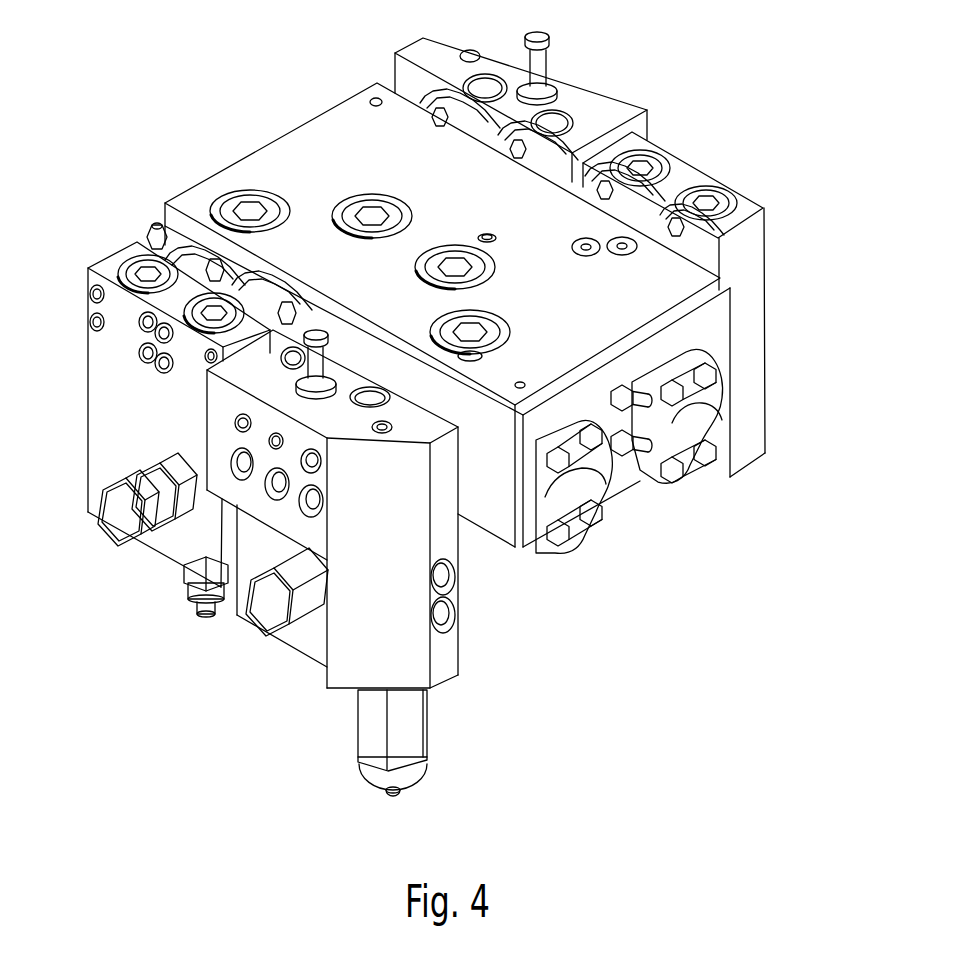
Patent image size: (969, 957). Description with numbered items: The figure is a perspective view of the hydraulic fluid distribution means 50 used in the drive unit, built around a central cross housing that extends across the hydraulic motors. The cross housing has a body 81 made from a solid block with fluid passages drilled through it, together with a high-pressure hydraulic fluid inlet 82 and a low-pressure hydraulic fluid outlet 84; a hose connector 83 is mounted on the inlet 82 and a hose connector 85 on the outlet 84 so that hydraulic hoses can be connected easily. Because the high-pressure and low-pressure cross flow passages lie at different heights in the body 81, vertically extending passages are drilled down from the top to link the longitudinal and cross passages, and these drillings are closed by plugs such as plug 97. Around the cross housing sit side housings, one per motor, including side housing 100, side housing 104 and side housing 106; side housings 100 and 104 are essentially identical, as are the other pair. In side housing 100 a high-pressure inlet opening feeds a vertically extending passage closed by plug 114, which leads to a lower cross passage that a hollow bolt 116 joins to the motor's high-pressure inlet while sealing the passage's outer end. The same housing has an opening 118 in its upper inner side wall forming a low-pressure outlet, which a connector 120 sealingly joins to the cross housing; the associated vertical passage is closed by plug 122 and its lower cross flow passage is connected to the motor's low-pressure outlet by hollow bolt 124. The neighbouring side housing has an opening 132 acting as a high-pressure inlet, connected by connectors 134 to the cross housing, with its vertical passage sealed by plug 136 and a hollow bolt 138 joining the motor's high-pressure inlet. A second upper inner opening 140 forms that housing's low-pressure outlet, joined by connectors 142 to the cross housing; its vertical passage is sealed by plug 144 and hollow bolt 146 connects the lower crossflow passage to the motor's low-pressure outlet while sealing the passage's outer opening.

The hydraulic fluid distribution means 50 is at (780, 311).
The body 81 is at (320, 133).
The high-pressure hydraulic fluid inlet 82 is at (720, 437).
The hose connector 83 is at (700, 417).
The low-pressure hydraulic fluid outlet 84 is at (573, 493).
The hose connector 85 is at (536, 538).
The plug 97 is at (272, 205).
The side housing 100 is at (318, 697).
The side housing 104 is at (571, 64).
The side housing 106 is at (766, 222).
The plug 114 is at (206, 412).
The hollow bolt 116 is at (262, 612).
The opening 118 is at (436, 418).
The connector 120 is at (480, 370).
The plug 122 is at (354, 403).
The hollow bolt 124 is at (300, 615).
The opening 132 is at (234, 287).
The connectors 134 is at (262, 325).
The plug 136 is at (198, 335).
The hollow bolt 138 is at (167, 527).
The second upper inner opening 140 is at (148, 247).
The connectors 142 is at (210, 255).
The plug 144 is at (120, 267).
The hollow bolt 146 is at (112, 528).